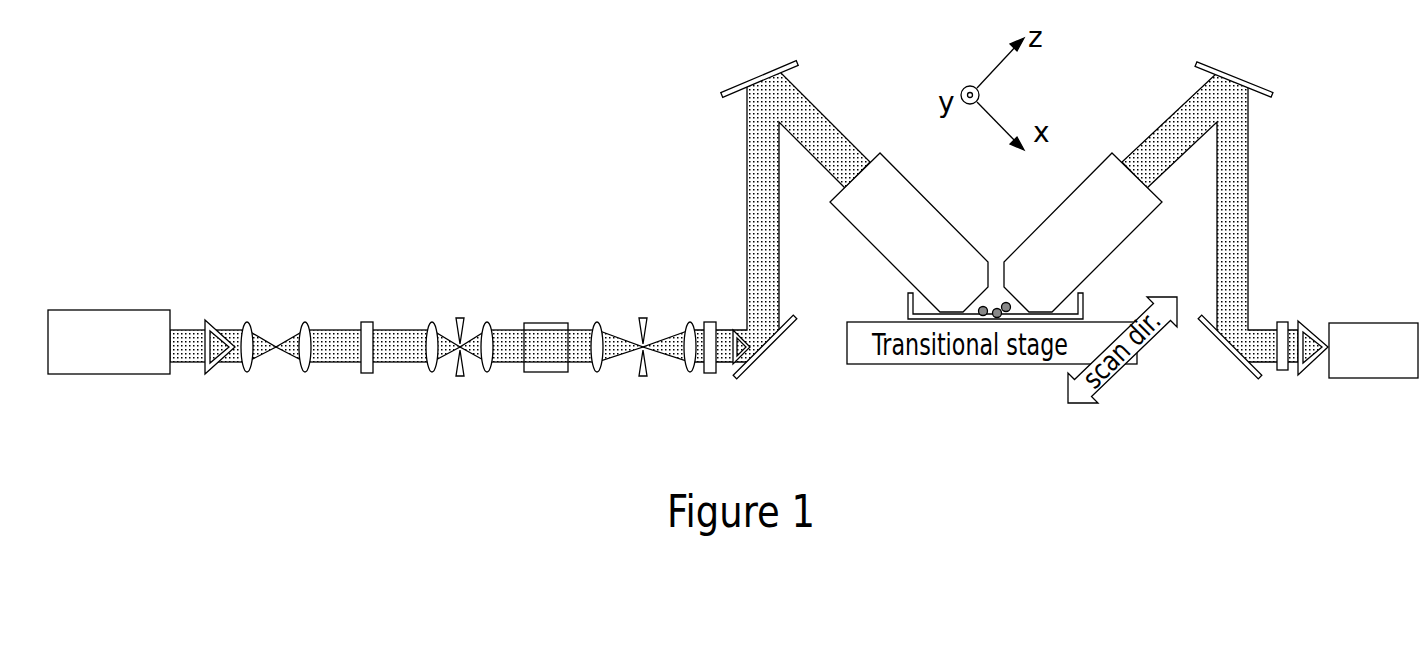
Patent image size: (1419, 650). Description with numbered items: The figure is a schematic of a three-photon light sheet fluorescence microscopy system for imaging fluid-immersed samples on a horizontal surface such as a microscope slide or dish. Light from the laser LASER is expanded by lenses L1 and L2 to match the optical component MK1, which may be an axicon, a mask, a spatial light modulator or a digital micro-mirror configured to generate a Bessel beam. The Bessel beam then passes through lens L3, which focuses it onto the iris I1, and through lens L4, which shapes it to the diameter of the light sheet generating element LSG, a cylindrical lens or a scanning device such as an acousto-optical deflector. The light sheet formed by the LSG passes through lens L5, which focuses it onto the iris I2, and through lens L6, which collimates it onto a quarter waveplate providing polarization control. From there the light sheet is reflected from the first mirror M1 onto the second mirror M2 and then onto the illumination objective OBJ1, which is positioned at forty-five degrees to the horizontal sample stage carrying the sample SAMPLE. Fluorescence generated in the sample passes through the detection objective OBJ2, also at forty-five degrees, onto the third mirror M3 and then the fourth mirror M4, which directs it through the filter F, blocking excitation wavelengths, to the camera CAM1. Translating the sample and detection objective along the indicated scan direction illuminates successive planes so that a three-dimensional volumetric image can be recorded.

The laser LASER is at (109, 342).
The lens L1 is at (255, 366).
The lens L2 is at (312, 366).
The optical component MK1 is at (377, 326).
The lens L3 is at (438, 366).
The iris I1 is at (468, 330).
The lens L4 is at (495, 366).
The light sheet generating element LSG is at (545, 328).
The lens L5 is at (603, 366).
The iris I2 is at (650, 330).
The lens L6 is at (698, 366).
The first mirror M1 is at (773, 348).
The second mirror M2 is at (758, 68).
The third mirror M3 is at (1234, 72).
The fourth mirror M4 is at (1230, 347).
The illumination objective OBJ1 is at (903, 232).
The detection objective OBJ2 is at (1095, 232).
The sample SAMPLE is at (996, 293).
The filter F is at (1284, 329).
The camera CAM1 is at (1374, 350).